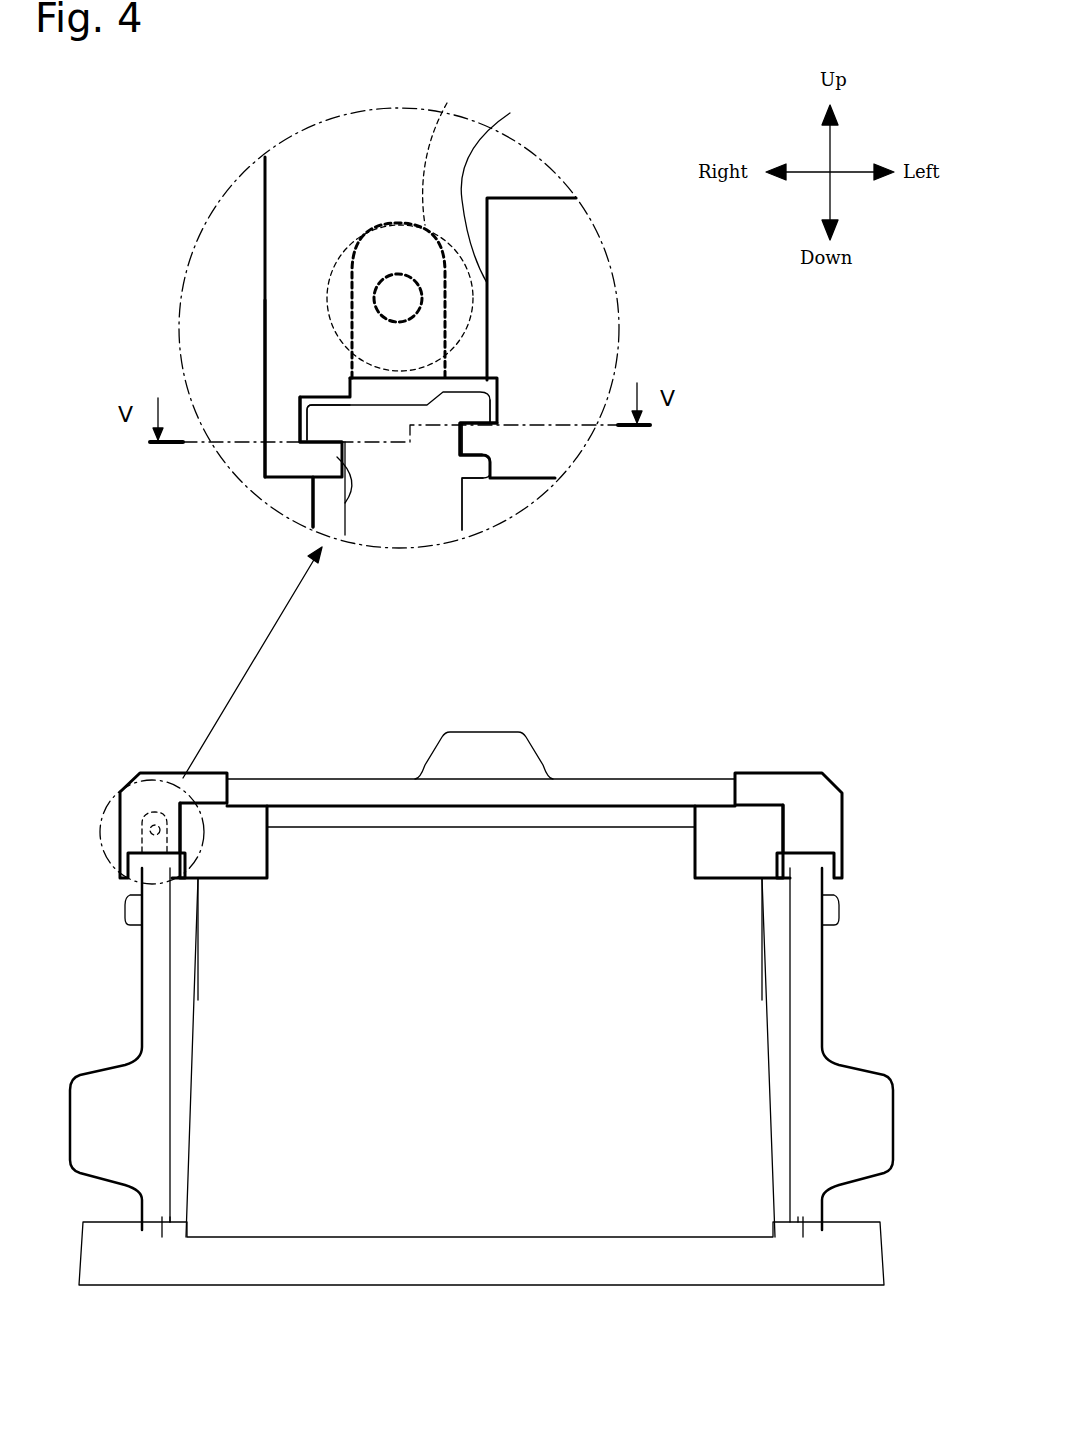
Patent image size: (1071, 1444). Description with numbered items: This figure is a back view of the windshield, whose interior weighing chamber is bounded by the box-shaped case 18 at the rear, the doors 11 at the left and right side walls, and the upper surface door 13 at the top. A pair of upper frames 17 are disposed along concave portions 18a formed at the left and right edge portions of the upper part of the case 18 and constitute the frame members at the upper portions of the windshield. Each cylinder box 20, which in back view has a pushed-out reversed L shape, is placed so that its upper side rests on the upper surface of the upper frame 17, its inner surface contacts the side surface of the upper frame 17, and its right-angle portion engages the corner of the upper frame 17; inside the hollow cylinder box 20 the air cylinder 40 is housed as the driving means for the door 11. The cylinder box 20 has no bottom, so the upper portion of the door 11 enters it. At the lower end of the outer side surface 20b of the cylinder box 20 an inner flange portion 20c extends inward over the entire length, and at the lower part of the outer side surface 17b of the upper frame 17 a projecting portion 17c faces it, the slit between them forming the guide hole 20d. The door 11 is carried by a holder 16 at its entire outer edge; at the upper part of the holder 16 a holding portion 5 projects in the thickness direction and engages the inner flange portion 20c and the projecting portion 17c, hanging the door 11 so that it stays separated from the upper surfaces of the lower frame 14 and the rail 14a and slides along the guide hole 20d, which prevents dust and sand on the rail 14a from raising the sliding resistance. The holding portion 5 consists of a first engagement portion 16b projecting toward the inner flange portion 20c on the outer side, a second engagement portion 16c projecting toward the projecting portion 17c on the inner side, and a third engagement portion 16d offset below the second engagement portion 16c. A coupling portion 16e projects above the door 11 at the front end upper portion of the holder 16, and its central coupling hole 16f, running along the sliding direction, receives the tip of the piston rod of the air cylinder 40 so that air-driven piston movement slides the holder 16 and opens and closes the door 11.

The holding portion 5 is at (492, 485).
The door 11 is at (139, 1020).
The upper surface door 13 is at (612, 795).
The lower frame 14 is at (372, 1252).
The rail 14a is at (155, 1226).
The holder 16 is at (360, 517).
The first engagement portion 16b is at (332, 428).
The second engagement portion 16c is at (457, 413).
The third engagement portion 16d is at (472, 470).
The coupling portion 16e is at (345, 298).
The coupling hole 16f is at (400, 292).
The upper frame 17 is at (568, 244).
The outer side surface 17b is at (505, 190).
The projecting portion 17c is at (483, 443).
The case 18 is at (452, 1197).
The concave portion 18a is at (227, 877).
The cylinder box 20 is at (292, 203).
The outer side surface 20b is at (262, 335).
The inner flange portion 20c is at (322, 453).
The guide hole 20d is at (335, 536).
The air cylinder 40 is at (446, 148).